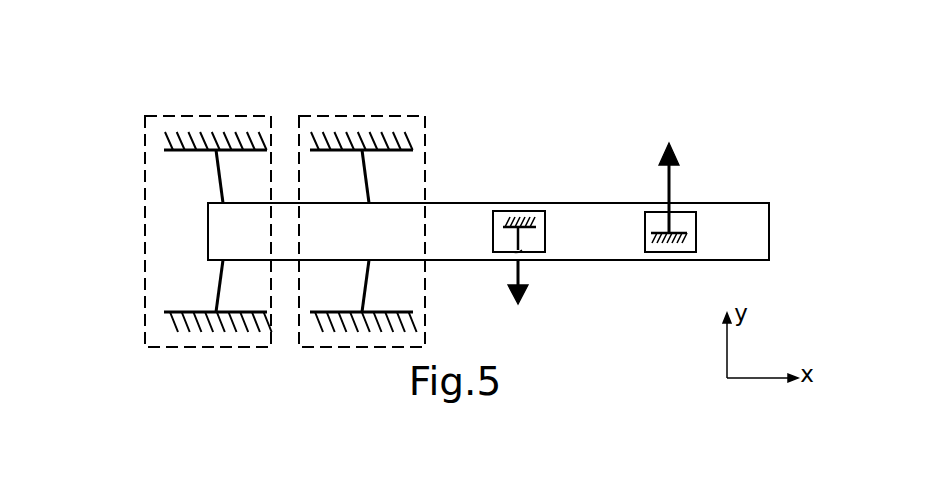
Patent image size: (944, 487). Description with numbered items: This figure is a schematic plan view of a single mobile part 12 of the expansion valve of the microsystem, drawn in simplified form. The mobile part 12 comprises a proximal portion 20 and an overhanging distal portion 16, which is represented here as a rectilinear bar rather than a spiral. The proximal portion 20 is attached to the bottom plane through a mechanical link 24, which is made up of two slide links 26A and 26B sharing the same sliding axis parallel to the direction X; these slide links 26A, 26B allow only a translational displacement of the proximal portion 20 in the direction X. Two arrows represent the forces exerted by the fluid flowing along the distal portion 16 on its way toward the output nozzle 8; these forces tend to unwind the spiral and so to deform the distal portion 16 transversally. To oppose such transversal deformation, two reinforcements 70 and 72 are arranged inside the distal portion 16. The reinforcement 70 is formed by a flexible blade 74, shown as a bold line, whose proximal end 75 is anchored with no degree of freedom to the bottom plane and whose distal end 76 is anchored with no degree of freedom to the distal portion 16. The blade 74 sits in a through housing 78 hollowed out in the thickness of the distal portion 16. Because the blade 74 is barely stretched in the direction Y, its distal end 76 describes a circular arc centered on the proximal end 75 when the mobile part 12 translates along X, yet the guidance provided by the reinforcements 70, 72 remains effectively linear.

The output nozzle 8 is at (165, 115).
The mobile part 12 is at (450, 204).
The distal portion 16 is at (727, 243).
The proximal portion 20 is at (225, 237).
The mechanical link 24 is at (268, 31).
The slide link 26A is at (270, 115).
The slide link 26B is at (335, 115).
The reinforcement 70 is at (465, 120).
The reinforcement 72 is at (677, 222).
The flexible blade 74 is at (508, 229).
The proximal end 75 is at (527, 217).
The distal end 76 is at (520, 251).
The housing 78 is at (536, 241).